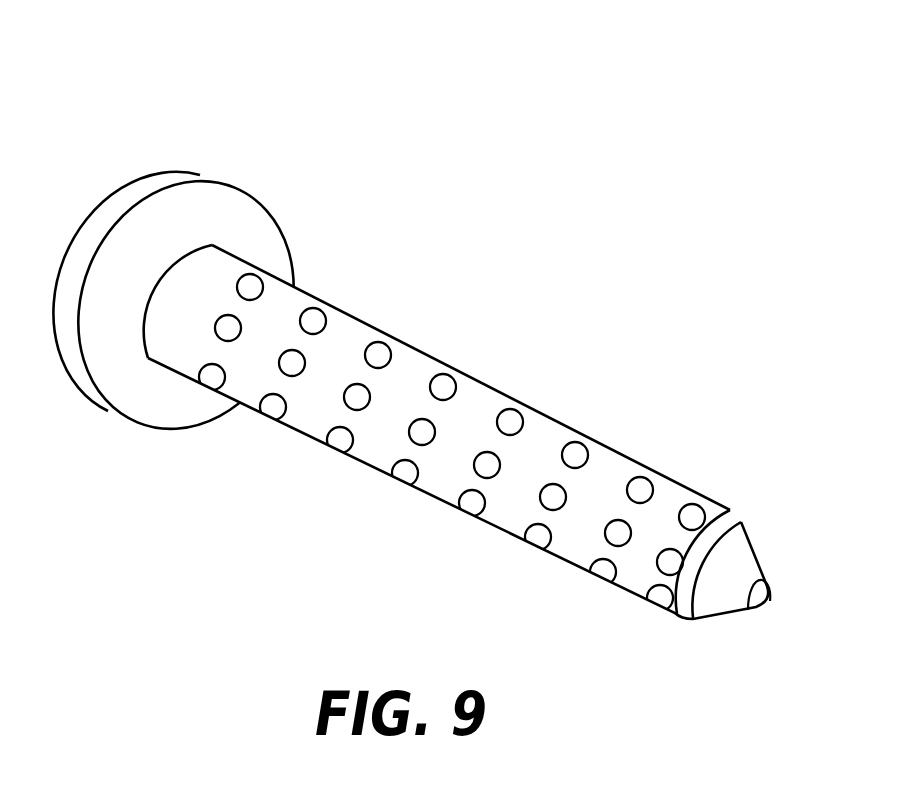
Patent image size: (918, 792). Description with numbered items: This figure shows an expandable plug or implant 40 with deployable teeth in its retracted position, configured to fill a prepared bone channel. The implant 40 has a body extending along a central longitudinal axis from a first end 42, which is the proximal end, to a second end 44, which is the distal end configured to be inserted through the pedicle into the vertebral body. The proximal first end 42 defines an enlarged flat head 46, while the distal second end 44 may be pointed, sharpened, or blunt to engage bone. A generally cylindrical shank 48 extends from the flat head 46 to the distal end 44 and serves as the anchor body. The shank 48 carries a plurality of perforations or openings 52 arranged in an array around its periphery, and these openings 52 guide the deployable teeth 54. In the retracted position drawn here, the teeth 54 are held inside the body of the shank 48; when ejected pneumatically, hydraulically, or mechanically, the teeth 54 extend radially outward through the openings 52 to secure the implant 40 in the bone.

The implant 40 is at (189, 82).
The first end 42 is at (185, 295).
The second end 44 is at (764, 597).
The flat head 46 is at (258, 206).
The shank 48 is at (437, 429).
The openings 52 is at (520, 414).
The deployable teeth 54 is at (452, 442).